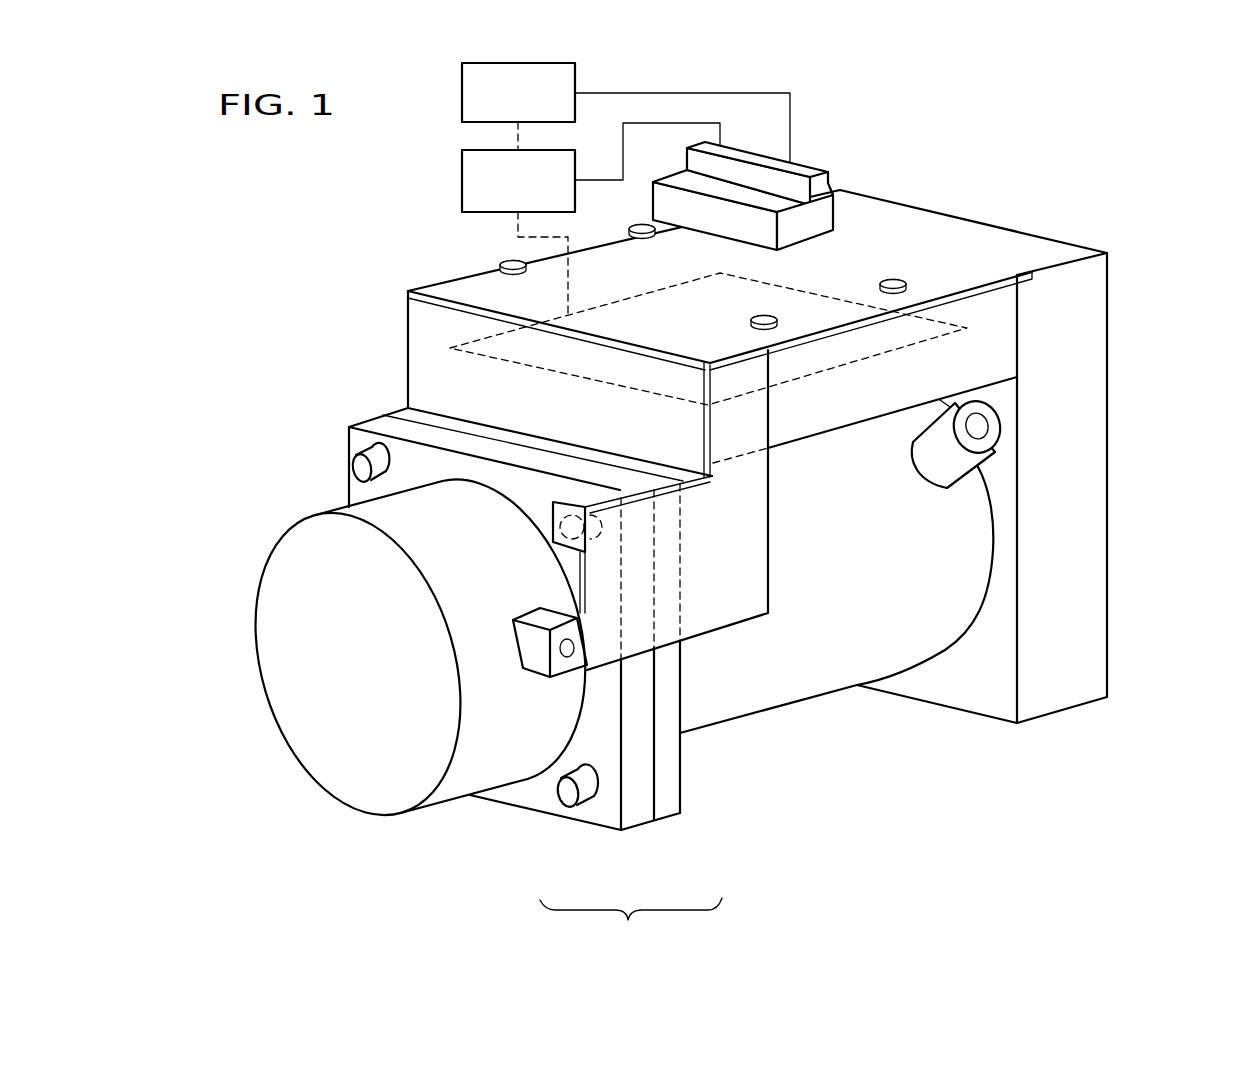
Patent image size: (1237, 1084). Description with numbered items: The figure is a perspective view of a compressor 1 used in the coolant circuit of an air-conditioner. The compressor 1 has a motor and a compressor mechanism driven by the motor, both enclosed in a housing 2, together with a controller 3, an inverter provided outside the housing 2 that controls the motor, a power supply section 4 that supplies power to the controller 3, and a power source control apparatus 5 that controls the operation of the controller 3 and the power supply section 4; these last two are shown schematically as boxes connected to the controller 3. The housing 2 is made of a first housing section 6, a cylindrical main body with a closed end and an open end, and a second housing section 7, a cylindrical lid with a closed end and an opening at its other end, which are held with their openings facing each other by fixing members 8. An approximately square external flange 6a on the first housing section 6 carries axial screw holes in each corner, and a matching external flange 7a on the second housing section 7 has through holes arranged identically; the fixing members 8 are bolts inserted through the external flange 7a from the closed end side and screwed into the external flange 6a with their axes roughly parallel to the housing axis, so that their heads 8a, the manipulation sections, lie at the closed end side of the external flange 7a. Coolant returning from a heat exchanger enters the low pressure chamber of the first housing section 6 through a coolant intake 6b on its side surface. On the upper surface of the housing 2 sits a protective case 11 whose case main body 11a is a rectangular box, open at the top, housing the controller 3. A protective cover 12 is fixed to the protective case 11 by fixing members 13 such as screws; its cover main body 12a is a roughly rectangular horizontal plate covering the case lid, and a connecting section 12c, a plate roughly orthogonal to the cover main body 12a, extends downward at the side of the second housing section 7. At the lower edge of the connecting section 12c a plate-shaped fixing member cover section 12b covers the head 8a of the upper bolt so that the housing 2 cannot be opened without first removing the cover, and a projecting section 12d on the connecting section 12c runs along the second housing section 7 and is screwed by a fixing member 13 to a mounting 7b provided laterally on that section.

The compressor 1 is at (1108, 196).
The housing 2 is at (652, 669).
The controller 3 is at (630, 292).
The power supply section 4 is at (462, 93).
The power source control apparatus 5 is at (462, 183).
The first housing section 6 is at (878, 642).
The external flange 6a is at (672, 668).
The coolant intake 6b is at (998, 437).
The second housing section 7 is at (459, 693).
The external flange 7a is at (637, 813).
The mounting 7b is at (537, 612).
The fixing member 8 is at (483, 638).
The head 8a is at (360, 468).
The protective case 11 is at (1024, 488).
The case main body 11a is at (1015, 345).
The protective cover 12 is at (757, 430).
The cover main body 12a is at (866, 250).
The fixing member cover section 12b is at (560, 520).
The connecting section 12c is at (740, 545).
The projecting section 12d is at (548, 670).
The fixing member 13 is at (642, 226).